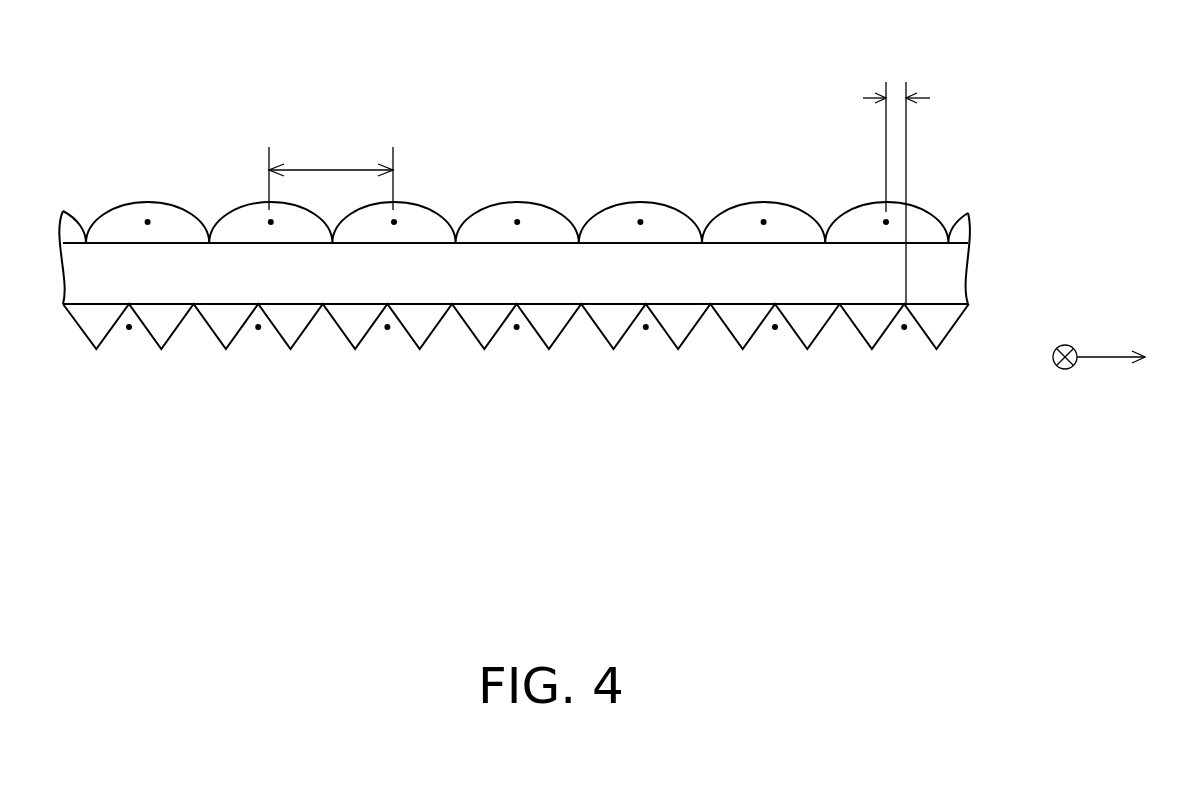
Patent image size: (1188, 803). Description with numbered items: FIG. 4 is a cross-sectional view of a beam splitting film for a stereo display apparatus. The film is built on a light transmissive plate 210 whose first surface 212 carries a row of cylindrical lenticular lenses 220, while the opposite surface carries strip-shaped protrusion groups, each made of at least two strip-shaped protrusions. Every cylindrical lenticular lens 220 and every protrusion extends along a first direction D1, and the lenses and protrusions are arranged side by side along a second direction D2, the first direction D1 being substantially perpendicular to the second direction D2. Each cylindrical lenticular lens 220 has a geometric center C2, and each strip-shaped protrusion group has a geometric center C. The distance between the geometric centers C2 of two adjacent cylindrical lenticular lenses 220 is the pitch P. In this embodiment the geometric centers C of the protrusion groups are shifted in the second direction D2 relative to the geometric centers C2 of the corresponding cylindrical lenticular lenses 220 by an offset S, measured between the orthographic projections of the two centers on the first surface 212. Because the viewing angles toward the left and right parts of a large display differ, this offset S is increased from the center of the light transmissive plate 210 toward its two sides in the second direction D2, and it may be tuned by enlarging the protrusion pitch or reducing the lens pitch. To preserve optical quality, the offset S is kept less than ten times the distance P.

The light transmissive plate 210 is at (953, 275).
The first surface 212 is at (923, 243).
The cylindrical lenticular lenses 220 is at (867, 208).
The geometric center of strip-shaped protrusion group C is at (905, 330).
The geometric center of cylindrical lenticular lens C2 is at (148, 222).
The distance between geometric centers of two adjacent cylindrical lenticular lenses P is at (331, 170).
The offset S is at (896, 179).
The first direction D1 is at (1065, 369).
The second direction D2 is at (1132, 357).